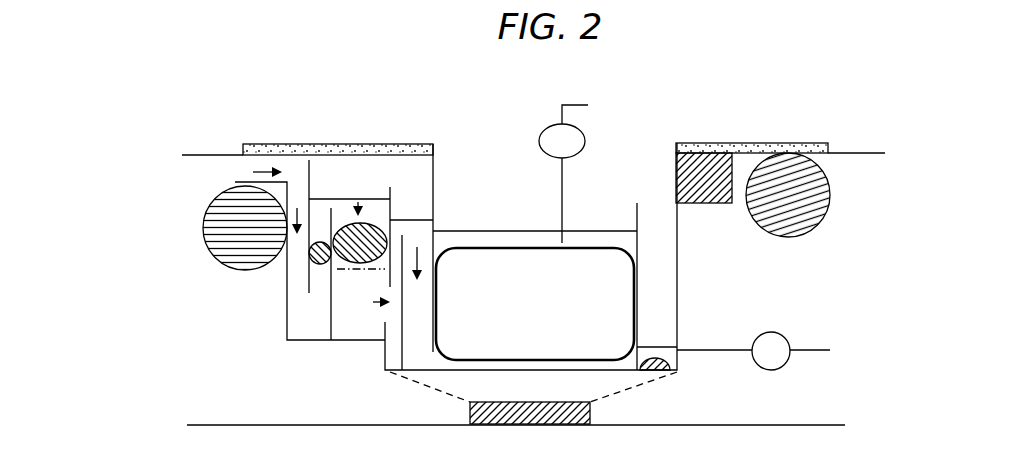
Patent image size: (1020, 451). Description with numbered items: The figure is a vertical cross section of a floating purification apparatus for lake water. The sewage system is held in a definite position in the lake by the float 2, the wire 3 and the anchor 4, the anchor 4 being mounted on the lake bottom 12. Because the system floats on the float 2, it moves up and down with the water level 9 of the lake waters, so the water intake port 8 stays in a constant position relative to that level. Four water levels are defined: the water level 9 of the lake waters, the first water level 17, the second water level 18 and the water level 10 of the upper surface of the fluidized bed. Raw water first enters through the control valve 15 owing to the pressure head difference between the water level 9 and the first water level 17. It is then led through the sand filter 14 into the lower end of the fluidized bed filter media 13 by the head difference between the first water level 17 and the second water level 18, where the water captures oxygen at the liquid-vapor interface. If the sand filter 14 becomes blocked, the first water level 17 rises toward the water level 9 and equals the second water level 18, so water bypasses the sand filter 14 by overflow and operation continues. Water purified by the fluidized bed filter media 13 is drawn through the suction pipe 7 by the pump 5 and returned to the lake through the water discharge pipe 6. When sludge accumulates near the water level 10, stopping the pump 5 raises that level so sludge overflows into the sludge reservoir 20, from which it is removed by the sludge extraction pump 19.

The float 2 is at (232, 270).
The wire 3 is at (628, 390).
The anchor 4 is at (468, 408).
The pump 5 is at (536, 141).
The water discharge pipe 6 is at (580, 105).
The suction pipe 7 is at (556, 191).
The water intake port 8 is at (234, 173).
The water level of the lake waters 9 is at (217, 155).
The water level of the upper surface of the fluidized bed 10 is at (455, 230).
The lake bottom 12 is at (228, 425).
The fluidized bed filter media 13 is at (593, 246).
The sand filter 14 is at (358, 273).
The control valve 15 is at (322, 272).
The first water level 17 is at (355, 198).
The second water level 18 is at (401, 219).
The sludge extraction pump 19 is at (785, 339).
The sludge reservoir 20 is at (652, 357).